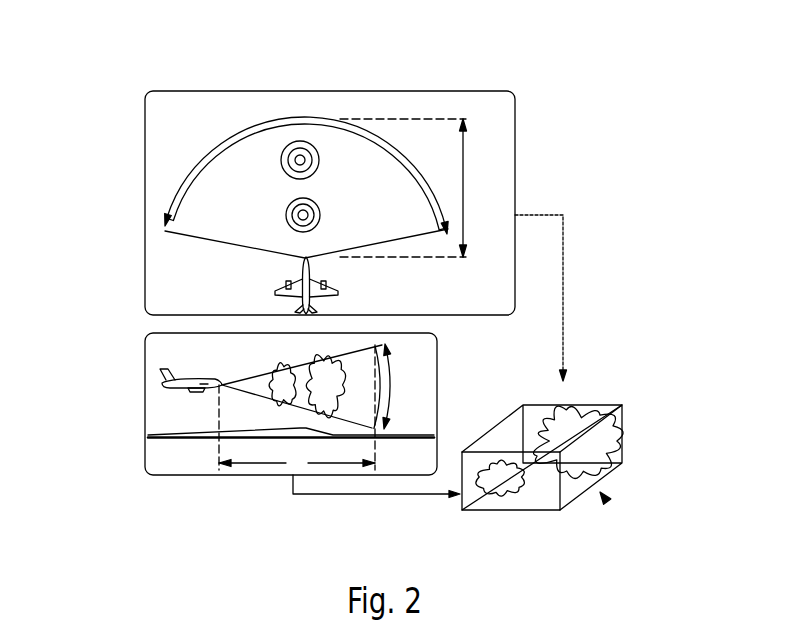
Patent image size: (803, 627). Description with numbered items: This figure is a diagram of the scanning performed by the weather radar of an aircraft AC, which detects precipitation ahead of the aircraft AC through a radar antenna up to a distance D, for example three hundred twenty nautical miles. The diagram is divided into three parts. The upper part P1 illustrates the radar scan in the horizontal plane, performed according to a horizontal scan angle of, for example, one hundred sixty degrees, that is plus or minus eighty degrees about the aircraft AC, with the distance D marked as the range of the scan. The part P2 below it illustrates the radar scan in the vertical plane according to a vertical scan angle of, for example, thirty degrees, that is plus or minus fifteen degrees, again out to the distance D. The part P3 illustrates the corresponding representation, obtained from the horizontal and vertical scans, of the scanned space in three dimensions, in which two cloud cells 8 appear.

The cloud cell 8 is at (308, 141).
The aircraft AC is at (300, 282).
The part illustrating a radar scan in the horizontal plane P1 is at (190, 90).
The part illustrating a radar scan in the vertical plane P2 is at (190, 476).
The part illustrating a 3D representation P3 is at (607, 502).
The distance D is at (350, 294).